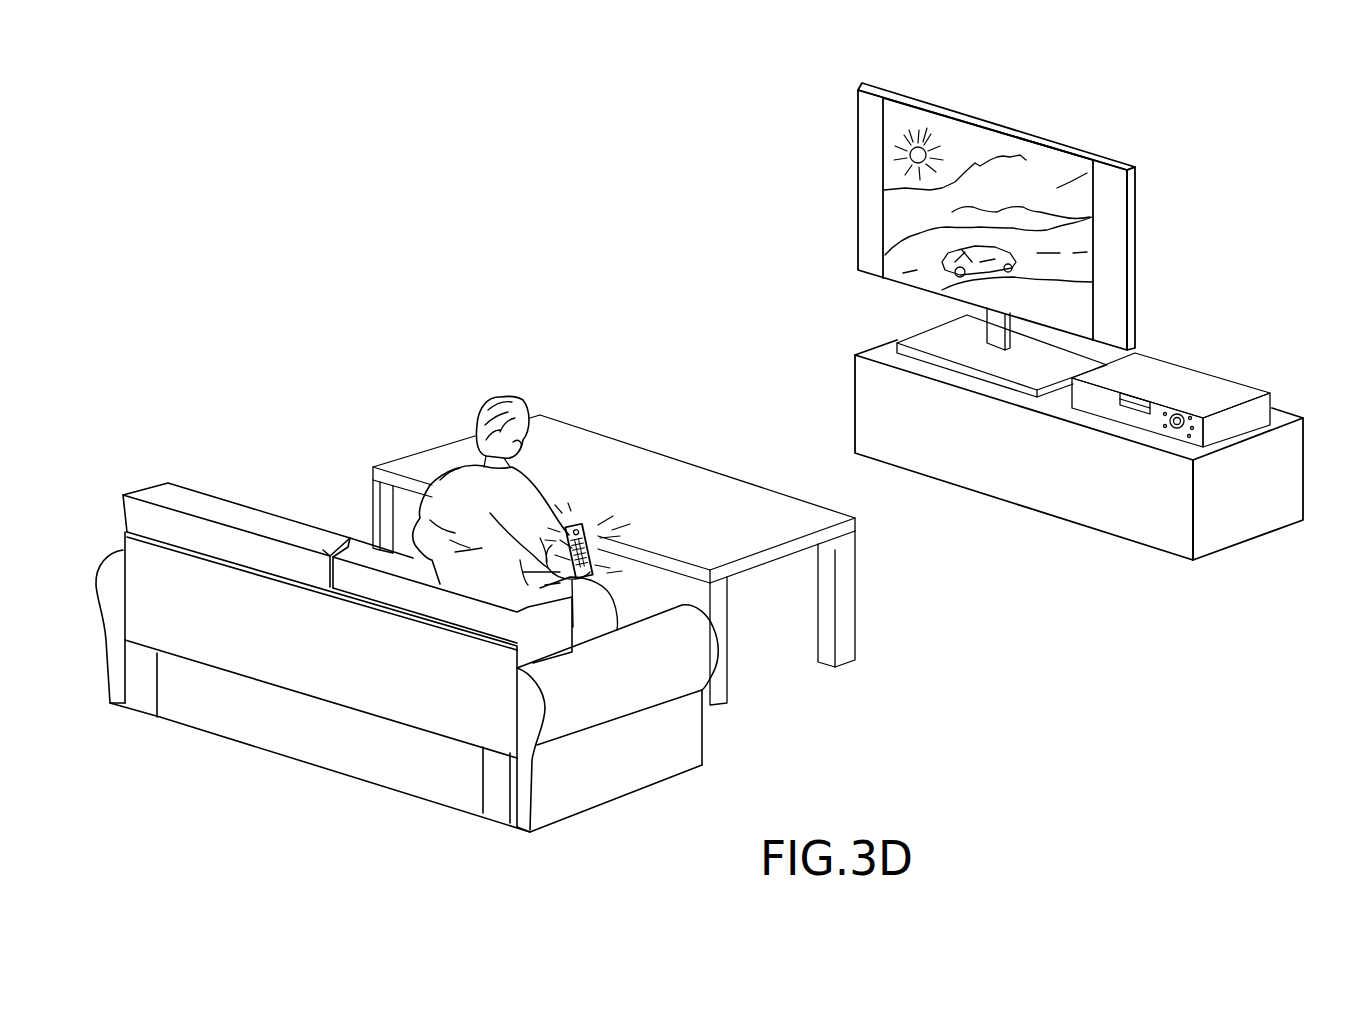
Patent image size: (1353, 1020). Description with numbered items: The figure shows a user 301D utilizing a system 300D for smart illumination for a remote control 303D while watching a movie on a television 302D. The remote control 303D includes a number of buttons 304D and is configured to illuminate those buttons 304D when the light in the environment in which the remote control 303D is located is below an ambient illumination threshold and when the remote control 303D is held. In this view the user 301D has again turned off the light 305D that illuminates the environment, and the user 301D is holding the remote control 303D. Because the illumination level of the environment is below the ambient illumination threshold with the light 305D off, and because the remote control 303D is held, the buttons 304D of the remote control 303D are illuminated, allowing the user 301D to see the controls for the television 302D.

The system 300D is at (588, 134).
The user 301D is at (483, 405).
The television 302D is at (1130, 235).
The remote control 303D is at (595, 550).
The buttons 304D is at (593, 563).
The light 305D is at (593, 532).